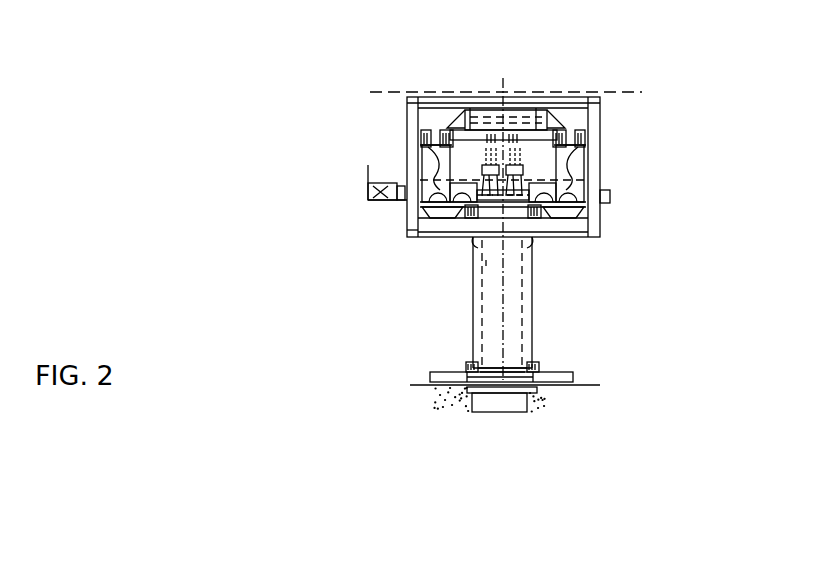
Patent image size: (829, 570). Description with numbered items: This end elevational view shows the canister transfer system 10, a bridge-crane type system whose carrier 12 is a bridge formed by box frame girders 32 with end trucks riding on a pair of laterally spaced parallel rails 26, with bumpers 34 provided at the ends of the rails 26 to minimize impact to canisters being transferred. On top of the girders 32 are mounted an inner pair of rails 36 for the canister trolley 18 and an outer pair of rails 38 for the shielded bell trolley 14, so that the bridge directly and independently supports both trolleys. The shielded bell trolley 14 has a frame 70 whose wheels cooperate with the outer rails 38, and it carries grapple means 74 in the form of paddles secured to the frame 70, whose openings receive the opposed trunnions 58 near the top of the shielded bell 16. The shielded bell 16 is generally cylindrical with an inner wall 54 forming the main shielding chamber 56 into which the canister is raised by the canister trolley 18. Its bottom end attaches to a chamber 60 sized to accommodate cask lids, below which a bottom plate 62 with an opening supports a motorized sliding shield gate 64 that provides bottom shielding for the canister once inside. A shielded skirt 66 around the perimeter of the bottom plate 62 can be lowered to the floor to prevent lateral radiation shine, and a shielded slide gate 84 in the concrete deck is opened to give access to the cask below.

The canister transfer system 10 is at (306, 329).
The carrier 12 is at (589, 166).
The shielded bell trolley 14 is at (406, 233).
The shielded bell 16 is at (531, 315).
The canister trolley 18 is at (550, 116).
The rails 26 is at (393, 204).
The box frame girders 32 is at (418, 163).
The bumpers 34 is at (372, 192).
The first or inner pair of rails 36 is at (441, 145).
The second or outer pair of rails 38 is at (420, 172).
The inner wall 54 is at (515, 300).
The main shielding chamber 56 is at (496, 274).
The trunnions 58 is at (470, 246).
The chamber 60 is at (472, 402).
The bottom plate 62 is at (533, 366).
The shield gate 64 is at (497, 375).
The shielded skirt 66 is at (430, 376).
The trolley frame 70 is at (585, 385).
The grapple means 74 is at (537, 228).
The shielded slide gate 84 is at (515, 394).